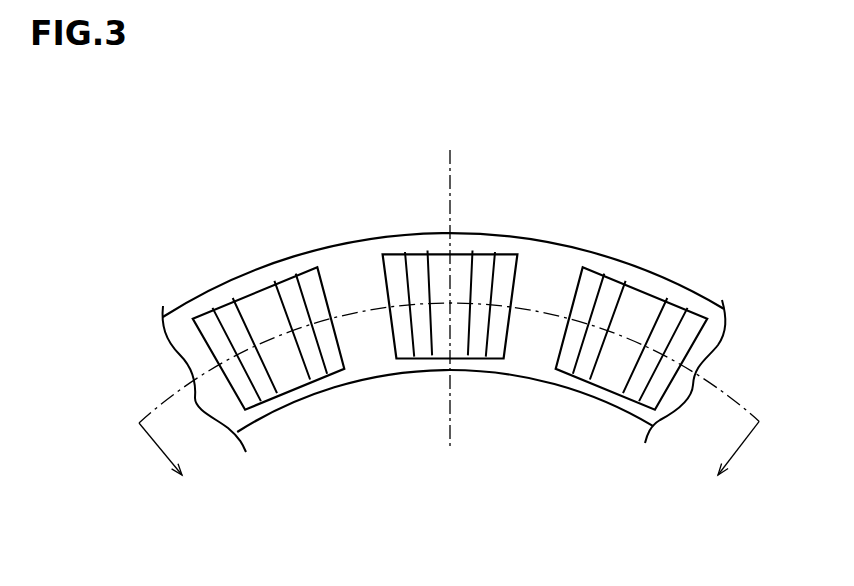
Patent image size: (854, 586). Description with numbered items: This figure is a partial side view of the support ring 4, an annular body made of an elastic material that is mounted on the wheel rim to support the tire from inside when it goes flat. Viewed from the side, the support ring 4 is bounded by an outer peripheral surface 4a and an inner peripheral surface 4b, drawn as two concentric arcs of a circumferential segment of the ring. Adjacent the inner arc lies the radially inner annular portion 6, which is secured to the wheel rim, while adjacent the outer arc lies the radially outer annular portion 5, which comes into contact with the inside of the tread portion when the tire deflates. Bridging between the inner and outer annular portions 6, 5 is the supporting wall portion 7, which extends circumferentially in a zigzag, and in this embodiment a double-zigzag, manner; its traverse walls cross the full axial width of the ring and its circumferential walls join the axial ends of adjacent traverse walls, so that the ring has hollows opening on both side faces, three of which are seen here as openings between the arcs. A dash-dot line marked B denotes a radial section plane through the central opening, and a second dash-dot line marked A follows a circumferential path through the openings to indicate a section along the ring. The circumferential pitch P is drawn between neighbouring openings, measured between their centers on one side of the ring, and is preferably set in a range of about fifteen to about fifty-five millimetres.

The support ring 4 is at (444, 313).
The outer peripheral surface 4a is at (333, 243).
The inner peripheral surface 4b is at (352, 381).
The radially outer annular portion 5 is at (627, 274).
The radially inner annular portion 6 is at (600, 400).
The supporting wall portion 7 is at (642, 312).
The pole pitch P is at (358, 260).
The section line B- B is at (450, 299).
The section line A- A is at (449, 400).